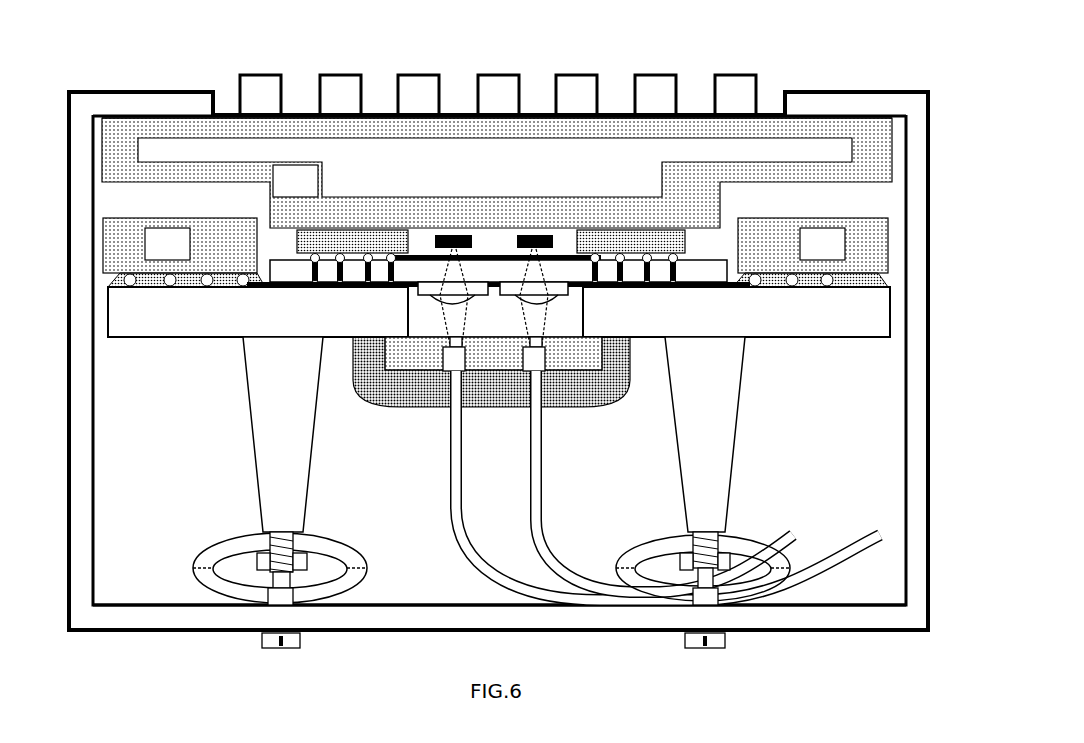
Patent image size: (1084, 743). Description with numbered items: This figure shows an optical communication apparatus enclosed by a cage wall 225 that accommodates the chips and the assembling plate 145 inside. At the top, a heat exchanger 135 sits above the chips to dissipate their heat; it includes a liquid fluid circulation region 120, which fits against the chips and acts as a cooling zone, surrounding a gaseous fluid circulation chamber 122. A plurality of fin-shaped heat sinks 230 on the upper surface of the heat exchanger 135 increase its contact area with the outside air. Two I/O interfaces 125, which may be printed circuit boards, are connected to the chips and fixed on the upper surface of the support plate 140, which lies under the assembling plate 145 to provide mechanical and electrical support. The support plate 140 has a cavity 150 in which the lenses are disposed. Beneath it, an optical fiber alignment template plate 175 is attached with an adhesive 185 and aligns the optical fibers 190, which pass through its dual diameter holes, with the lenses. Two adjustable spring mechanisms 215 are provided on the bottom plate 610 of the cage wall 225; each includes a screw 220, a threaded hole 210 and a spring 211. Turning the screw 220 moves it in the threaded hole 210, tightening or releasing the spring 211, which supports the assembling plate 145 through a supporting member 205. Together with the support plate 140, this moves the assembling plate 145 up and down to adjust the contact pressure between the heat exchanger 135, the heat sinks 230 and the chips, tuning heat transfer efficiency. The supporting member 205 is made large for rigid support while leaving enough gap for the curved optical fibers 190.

The liquid fluid circulation region 120 is at (295, 181).
The gaseous fluid circulation chamber 122 is at (497, 173).
The I/O interfaces 125 is at (495, 252).
The heat exchanger 135 is at (766, 116).
The support plate 140 is at (499, 312).
The assembling plate 145 is at (285, 289).
The cavity 150 is at (500, 316).
The optical fiber alignment template plate 175 is at (418, 358).
The adhesive 185 is at (568, 404).
The optical fibers 190 is at (466, 511).
The supporting member 205 is at (494, 434).
The threaded hole 210 is at (692, 539).
The spring 211 is at (294, 542).
The adjustable spring mechanisms 215 is at (218, 591).
The screw 220 is at (306, 639).
The cage wall 225 is at (84, 469).
The heat sinks 230 is at (498, 95).
The bottom plate 610 is at (110, 604).